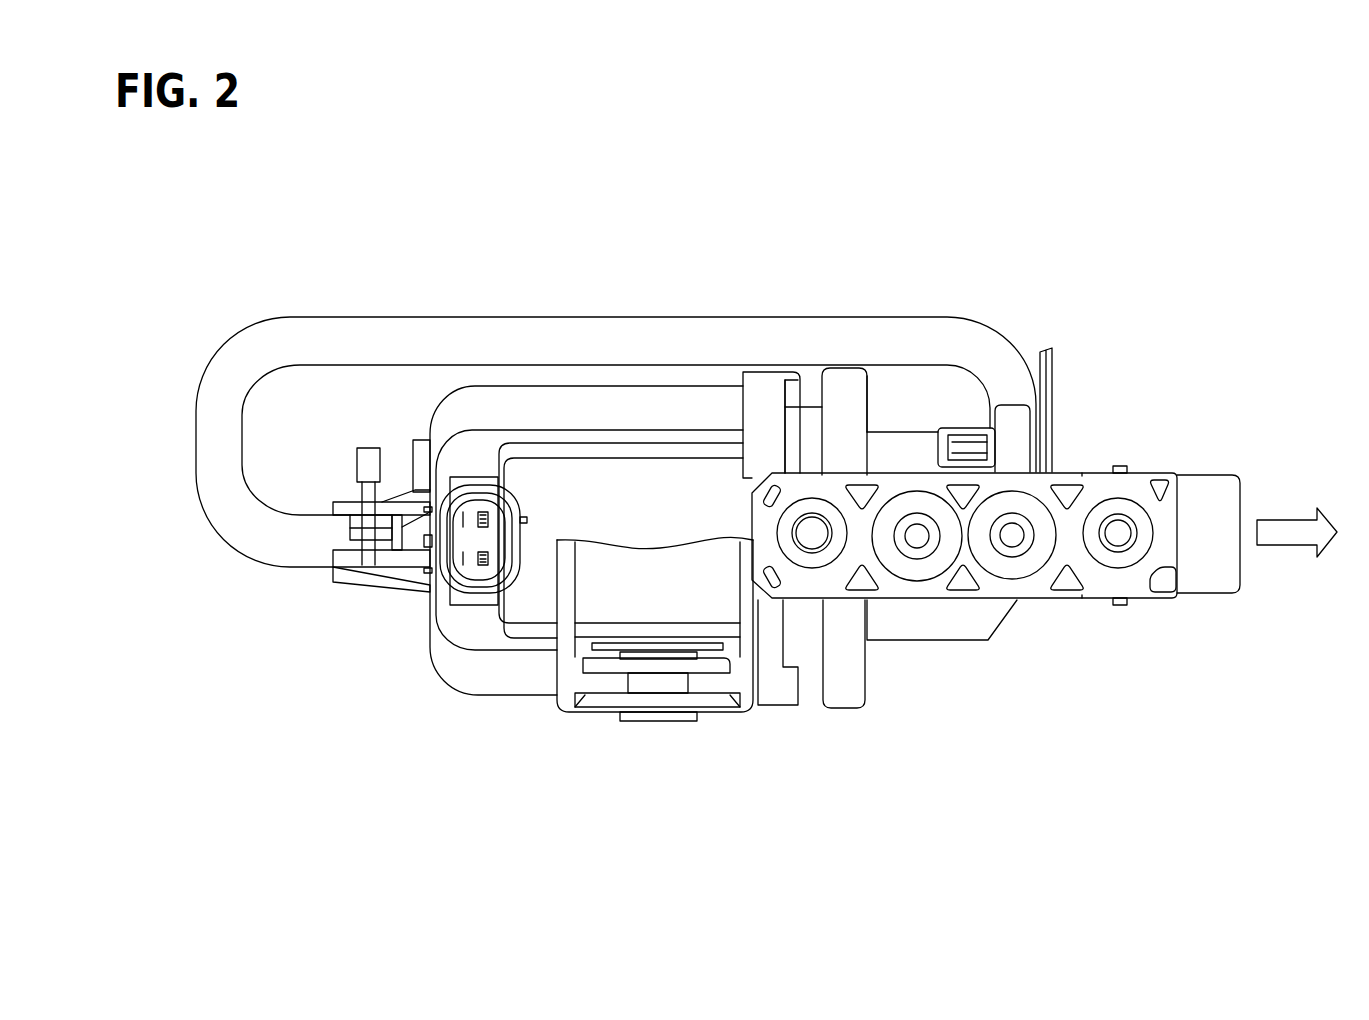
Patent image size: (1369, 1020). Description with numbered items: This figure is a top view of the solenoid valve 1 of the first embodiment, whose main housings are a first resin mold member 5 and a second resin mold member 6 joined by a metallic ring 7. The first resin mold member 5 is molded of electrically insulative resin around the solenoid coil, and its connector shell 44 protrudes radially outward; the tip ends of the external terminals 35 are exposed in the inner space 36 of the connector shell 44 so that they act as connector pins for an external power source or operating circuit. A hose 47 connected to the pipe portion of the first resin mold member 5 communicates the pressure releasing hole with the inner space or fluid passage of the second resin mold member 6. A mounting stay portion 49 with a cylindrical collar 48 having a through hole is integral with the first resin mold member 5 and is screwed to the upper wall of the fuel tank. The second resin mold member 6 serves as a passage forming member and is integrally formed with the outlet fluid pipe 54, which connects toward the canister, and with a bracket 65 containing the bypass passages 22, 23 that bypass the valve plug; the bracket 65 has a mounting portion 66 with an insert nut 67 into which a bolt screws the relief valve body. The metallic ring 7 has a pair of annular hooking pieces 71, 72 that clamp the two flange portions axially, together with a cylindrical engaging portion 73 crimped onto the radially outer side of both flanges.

The solenoid valve 1 is at (360, 750).
The first resin mold member 5 is at (497, 696).
The second resin mold member 6 is at (964, 641).
The metallic ring 7 is at (848, 709).
The bypass passage 22 is at (917, 540).
The bypass passage 23 is at (1013, 538).
The external terminal 35 is at (483, 512).
The inner space 36 is at (453, 527).
The connector shell 44 is at (432, 590).
The hose 47 is at (628, 317).
The cylindrical collar 48 is at (655, 722).
The mounting stay portion 49 is at (602, 690).
The fluid pipe 54 is at (1208, 473).
The bracket 65 is at (1140, 470).
The mounting portion 66 is at (1100, 580).
The insert nut 67 is at (812, 560).
The annular hooking piece 71 is at (819, 383).
The annular hooking piece 72 is at (869, 375).
The cylindrical engaging portion 73 is at (846, 372).